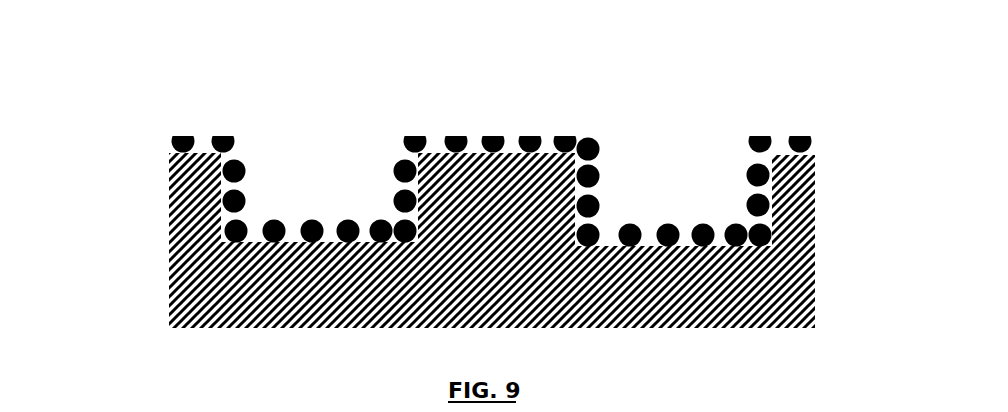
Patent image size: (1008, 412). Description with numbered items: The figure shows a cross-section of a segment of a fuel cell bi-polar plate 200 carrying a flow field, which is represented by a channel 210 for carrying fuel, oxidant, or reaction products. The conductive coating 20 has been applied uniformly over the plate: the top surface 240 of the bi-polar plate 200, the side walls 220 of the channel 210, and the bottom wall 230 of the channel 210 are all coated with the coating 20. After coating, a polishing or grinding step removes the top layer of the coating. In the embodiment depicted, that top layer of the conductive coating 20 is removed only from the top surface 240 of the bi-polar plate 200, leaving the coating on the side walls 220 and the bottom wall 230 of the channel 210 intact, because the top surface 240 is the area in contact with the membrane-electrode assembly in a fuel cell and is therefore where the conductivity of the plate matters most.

The bi-polar plate 200 is at (430, 240).
The channel 210 is at (243, 148).
The coating 20 is at (159, 135).
The top surface 240 is at (530, 93).
The side walls 220 is at (725, 144).
The bottom wall 230 is at (760, 174).